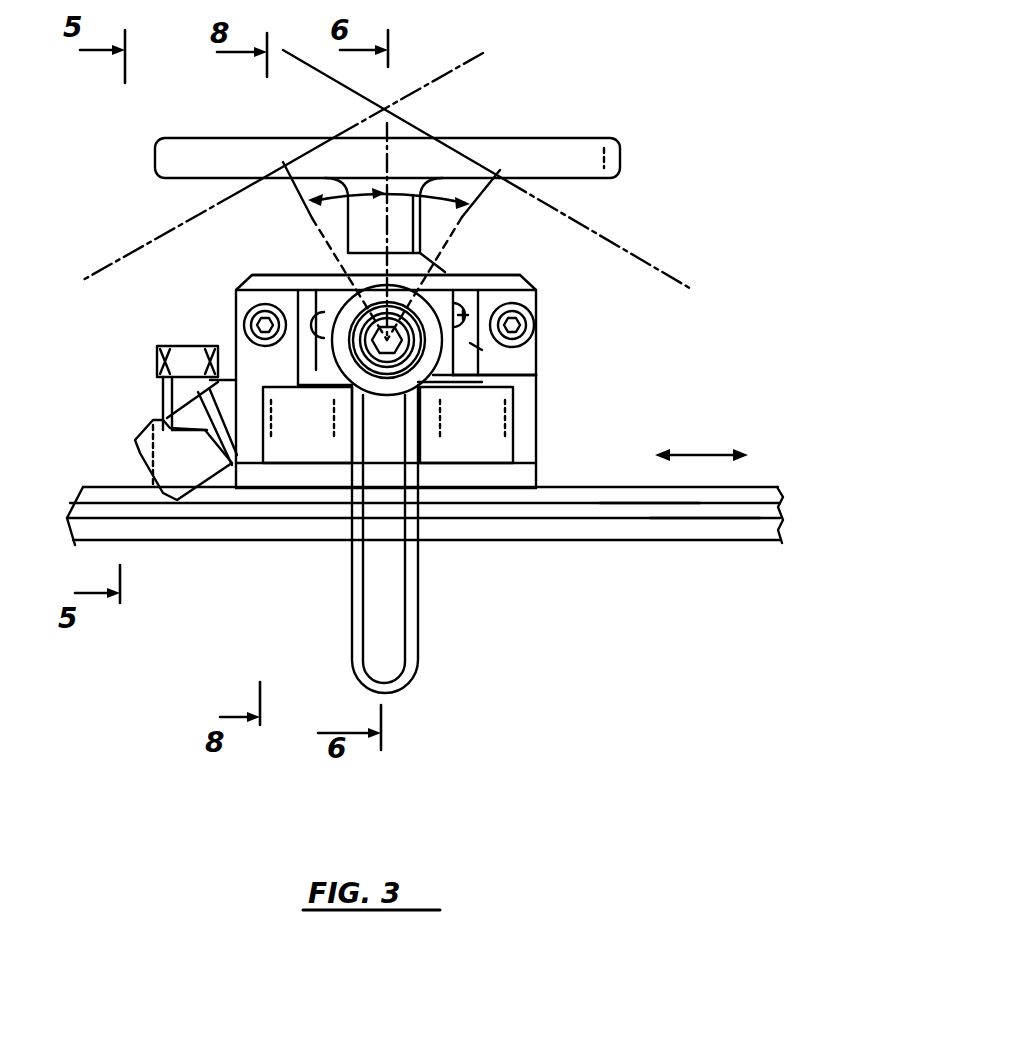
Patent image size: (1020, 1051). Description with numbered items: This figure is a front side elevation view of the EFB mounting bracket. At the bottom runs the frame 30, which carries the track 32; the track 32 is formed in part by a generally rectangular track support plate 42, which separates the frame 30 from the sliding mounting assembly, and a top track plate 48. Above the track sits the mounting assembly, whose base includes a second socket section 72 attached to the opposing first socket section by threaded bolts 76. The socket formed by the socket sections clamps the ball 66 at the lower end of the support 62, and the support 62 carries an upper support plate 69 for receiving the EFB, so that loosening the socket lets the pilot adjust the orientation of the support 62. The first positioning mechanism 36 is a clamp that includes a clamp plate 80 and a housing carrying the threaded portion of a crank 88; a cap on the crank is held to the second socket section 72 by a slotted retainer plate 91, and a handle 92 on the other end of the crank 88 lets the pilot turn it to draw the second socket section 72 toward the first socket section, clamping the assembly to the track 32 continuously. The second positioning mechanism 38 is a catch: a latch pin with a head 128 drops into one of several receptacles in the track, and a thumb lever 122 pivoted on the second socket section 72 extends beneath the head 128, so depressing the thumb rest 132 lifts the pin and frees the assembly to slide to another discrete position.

The frame 30 is at (803, 516).
The track 32 is at (550, 299).
The first positioning mechanism 36 is at (433, 375).
The second positioning mechanism 38 is at (140, 358).
The track support plate 42 is at (727, 512).
The top track plate 48 is at (648, 497).
The support 62 is at (630, 152).
The ball 66 is at (443, 264).
The upper support plate 69 is at (600, 138).
The second socket section 72 is at (550, 277).
The bolts 76 is at (244, 320).
The clamp plate 80 is at (525, 478).
The crank 88 is at (356, 305).
The slotted retainer plate 91 is at (470, 343).
The handle 92 is at (418, 642).
The thumb lever 122 is at (145, 415).
The head 128 is at (157, 346).
The thumb rest 132 is at (147, 447).